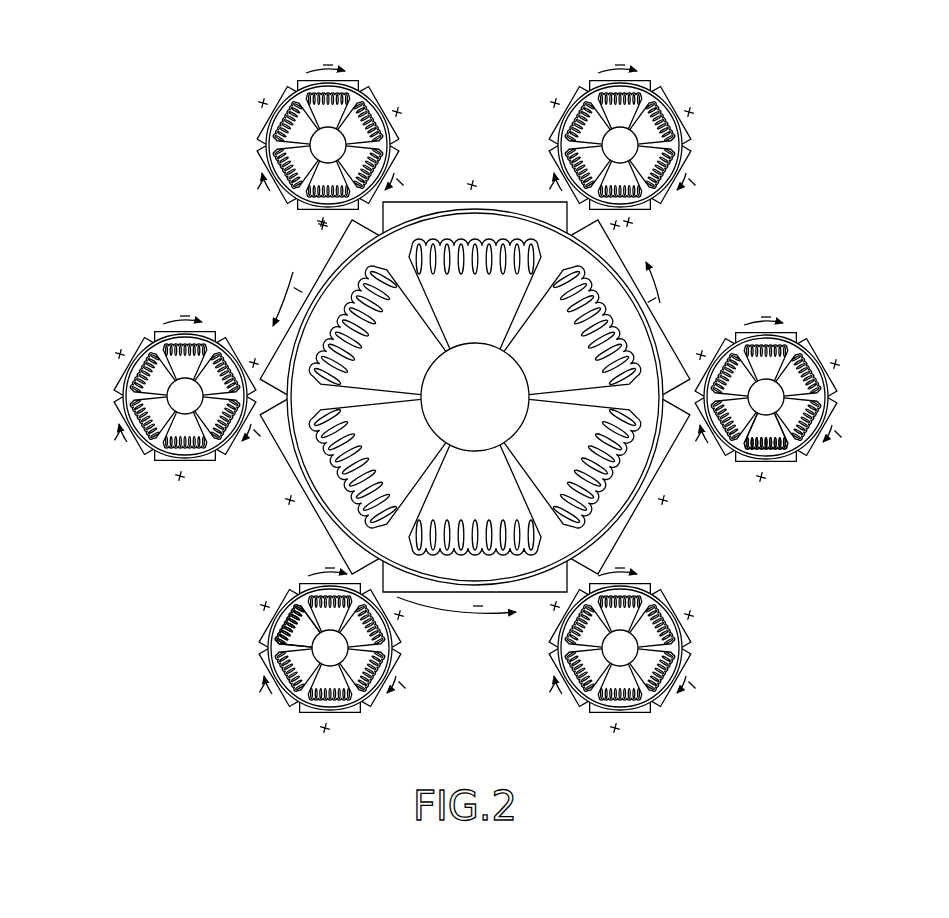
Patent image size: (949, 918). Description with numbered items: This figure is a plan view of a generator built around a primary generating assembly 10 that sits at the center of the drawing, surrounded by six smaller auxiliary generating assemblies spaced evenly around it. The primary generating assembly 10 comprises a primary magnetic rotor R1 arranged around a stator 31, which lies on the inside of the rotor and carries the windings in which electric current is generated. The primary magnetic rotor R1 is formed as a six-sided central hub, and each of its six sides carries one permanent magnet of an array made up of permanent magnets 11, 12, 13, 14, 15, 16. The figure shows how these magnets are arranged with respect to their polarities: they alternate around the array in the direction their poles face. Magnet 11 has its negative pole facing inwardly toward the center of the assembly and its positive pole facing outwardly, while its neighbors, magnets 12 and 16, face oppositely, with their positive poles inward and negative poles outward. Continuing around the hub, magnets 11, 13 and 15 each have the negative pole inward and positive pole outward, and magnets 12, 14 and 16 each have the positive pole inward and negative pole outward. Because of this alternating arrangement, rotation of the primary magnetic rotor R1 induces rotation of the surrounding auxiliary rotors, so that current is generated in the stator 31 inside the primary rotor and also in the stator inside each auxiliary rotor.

The primary generating assembly 10 is at (472, 393).
The permanent magnet 11 is at (441, 200).
The permanent magnet 12 is at (284, 337).
The permanent magnet 13 is at (318, 527).
The permanent magnet 14 is at (526, 598).
The permanent magnet 15 is at (648, 520).
The permanent magnet 16 is at (625, 238).
The stator 31 is at (330, 456).
The primary magnetic rotor R1 is at (512, 186).